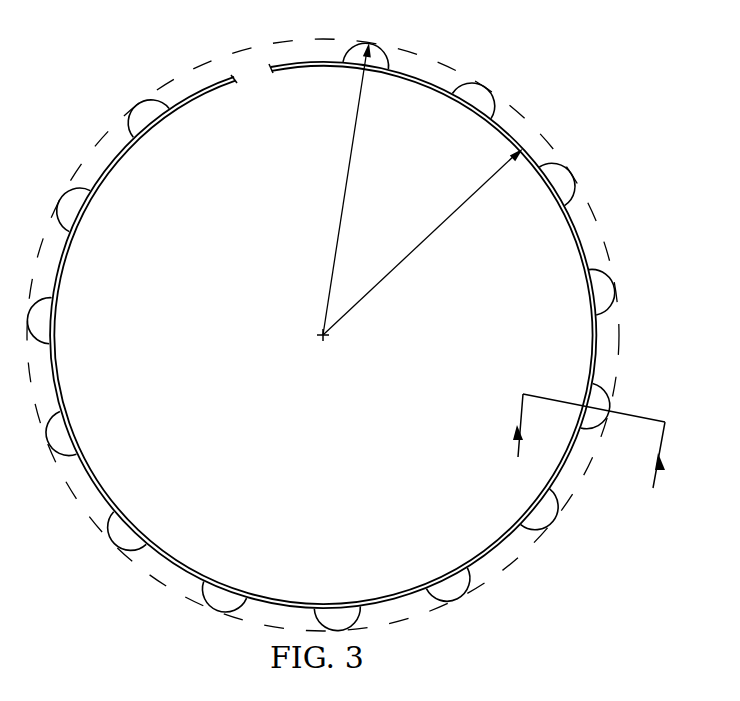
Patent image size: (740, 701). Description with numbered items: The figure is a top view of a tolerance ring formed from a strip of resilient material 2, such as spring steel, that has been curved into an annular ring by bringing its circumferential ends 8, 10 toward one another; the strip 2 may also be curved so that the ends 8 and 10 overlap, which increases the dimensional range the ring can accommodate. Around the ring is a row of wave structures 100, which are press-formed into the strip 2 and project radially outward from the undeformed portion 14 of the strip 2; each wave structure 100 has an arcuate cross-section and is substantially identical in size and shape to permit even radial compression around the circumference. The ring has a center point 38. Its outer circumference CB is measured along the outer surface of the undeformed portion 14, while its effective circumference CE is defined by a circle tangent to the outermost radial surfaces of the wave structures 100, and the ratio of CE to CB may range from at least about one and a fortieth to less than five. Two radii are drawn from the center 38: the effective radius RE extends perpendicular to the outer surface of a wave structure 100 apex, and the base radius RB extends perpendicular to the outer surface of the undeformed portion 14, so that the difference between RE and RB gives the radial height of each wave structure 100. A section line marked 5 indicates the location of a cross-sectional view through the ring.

The strip of resilient material 2 is at (512, 135).
The section line 5- 5 is at (583, 454).
The circumferential end 8 is at (236, 77).
The circumferential end 10 is at (268, 67).
The undeformed portion 14 is at (494, 556).
The center point 38 is at (334, 346).
The wave structure 100 is at (118, 543).
The effective circumference CE is at (599, 209).
The outer circumference CB is at (606, 337).
The effective radius RE is at (344, 189).
The base radius RB is at (423, 242).